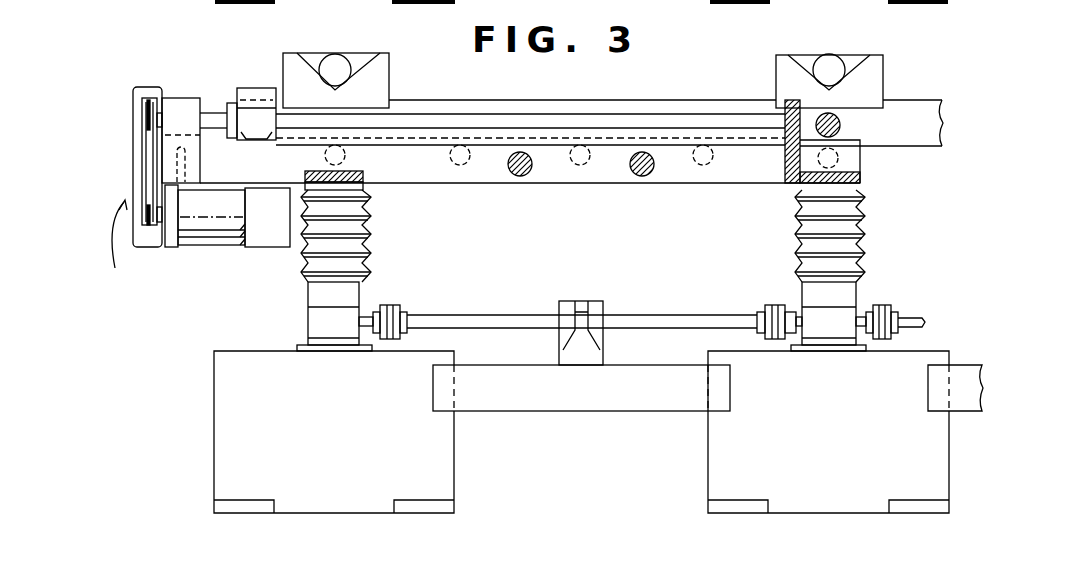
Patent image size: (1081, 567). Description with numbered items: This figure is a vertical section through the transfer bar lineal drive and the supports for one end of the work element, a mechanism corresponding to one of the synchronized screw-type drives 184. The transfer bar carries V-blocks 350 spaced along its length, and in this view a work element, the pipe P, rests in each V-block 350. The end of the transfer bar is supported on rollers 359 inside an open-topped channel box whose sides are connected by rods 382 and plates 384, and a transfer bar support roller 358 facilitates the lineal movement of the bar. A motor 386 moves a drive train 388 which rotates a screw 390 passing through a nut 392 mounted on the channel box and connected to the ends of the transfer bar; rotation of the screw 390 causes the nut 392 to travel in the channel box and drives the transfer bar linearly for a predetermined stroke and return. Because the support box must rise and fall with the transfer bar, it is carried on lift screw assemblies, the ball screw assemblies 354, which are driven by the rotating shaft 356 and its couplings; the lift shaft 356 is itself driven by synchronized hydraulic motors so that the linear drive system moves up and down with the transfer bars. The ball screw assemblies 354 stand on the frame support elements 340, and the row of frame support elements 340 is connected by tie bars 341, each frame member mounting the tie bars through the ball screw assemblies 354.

The screw-type drive 184 is at (155, 82).
The drive train 388 is at (143, 244).
The motor 386 is at (213, 233).
The screw 390 is at (212, 112).
The nut 392 is at (262, 86).
The V-block 350 is at (390, 76).
The pipe P is at (338, 62).
The plate 384 is at (305, 173).
The transfer bar support roller 358 is at (840, 161).
The rod 382 is at (524, 176).
The roller 359 is at (345, 160).
The ball screw assembly 354 is at (365, 243).
The rotating shaft 356 is at (497, 302).
The frame support element 340 is at (437, 472).
The tie bar 341 is at (582, 403).